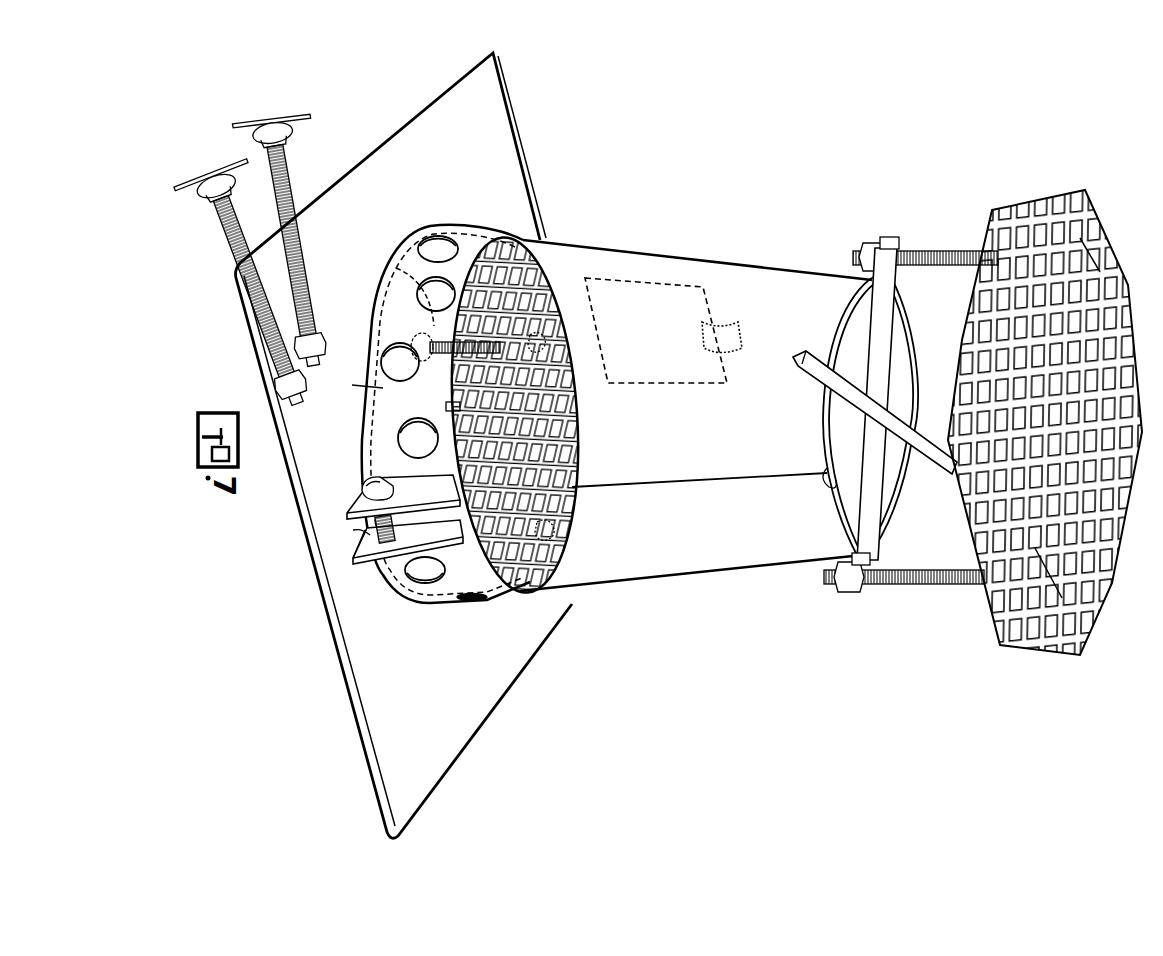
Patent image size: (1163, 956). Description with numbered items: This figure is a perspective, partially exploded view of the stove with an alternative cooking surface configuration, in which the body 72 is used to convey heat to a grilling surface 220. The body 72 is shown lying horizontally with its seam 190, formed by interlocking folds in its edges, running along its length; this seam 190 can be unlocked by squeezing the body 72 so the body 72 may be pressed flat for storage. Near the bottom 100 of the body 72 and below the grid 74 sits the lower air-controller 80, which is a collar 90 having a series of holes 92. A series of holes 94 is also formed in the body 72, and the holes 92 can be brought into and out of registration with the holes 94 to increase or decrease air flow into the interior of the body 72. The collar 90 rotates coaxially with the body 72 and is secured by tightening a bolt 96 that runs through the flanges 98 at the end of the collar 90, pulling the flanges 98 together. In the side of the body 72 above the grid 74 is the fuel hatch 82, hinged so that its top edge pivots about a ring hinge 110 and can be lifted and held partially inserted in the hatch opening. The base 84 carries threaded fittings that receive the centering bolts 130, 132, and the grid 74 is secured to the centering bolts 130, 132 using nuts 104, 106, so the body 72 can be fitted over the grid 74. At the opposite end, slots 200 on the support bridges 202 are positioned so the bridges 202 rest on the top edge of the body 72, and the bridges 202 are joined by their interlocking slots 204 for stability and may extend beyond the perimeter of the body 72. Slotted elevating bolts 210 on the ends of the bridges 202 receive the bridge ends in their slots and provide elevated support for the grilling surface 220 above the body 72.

The body 72 is at (686, 580).
The grid 74 is at (490, 598).
The lower air-controller 80 is at (484, 609).
The fuel hatch 82 is at (660, 300).
The base 84 is at (447, 731).
The collar 90 is at (359, 377).
The holes 92 is at (405, 348).
The holes 94 is at (393, 362).
The bolt 96 is at (368, 487).
The flanges 98 is at (373, 542).
The bottom 100 is at (406, 590).
The nut 104 is at (563, 318).
The nut 106 is at (565, 512).
The ring hinge 110 is at (717, 320).
The centering bolt 130 is at (396, 268).
The centering bolt 132 is at (554, 542).
The seam 190 is at (670, 483).
The slots 200 is at (864, 290).
The support bridges 202 is at (887, 337).
The interlocking slots 204 is at (867, 397).
The slotted elevating bolts 210 is at (277, 168).
The grilling surface 220 is at (1118, 525).